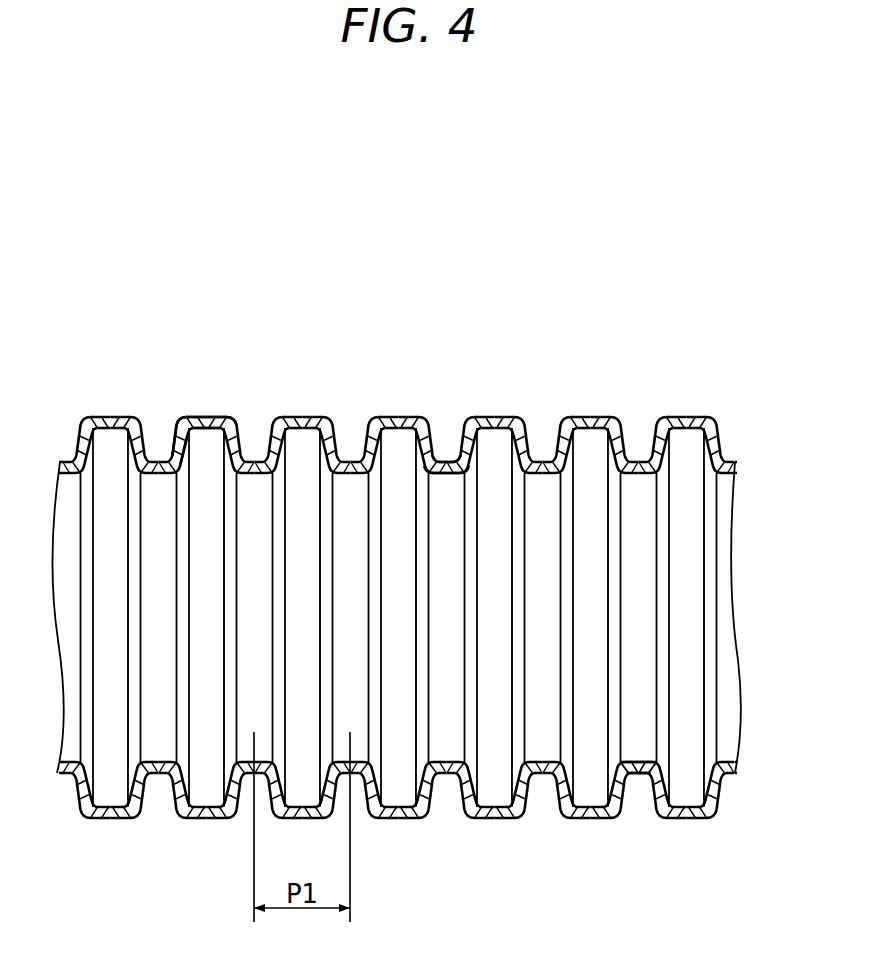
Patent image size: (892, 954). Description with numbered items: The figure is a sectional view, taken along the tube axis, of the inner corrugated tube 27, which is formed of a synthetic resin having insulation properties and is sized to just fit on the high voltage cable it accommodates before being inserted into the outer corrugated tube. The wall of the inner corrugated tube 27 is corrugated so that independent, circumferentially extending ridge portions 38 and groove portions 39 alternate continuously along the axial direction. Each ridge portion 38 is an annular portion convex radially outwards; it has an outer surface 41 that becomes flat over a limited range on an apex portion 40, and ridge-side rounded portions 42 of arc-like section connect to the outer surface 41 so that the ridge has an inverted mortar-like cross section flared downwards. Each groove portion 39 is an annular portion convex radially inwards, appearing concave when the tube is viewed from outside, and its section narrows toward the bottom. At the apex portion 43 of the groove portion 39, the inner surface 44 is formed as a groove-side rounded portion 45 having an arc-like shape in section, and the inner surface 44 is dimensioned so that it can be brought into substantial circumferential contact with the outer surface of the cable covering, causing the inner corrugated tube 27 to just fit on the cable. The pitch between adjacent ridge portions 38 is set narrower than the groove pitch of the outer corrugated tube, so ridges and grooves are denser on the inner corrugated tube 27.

The inner corrugated tube 27 is at (615, 362).
The ridge portion 38 is at (500, 417).
The groove portion 39 is at (446, 462).
The apex portion 40 is at (208, 417).
The outer surface 41 is at (193, 415).
The ridge-side rounded portion 42 is at (181, 417).
The apex portion 43 is at (636, 762).
The inner surface 44 is at (641, 766).
The groove-side rounded portion 45 is at (651, 769).